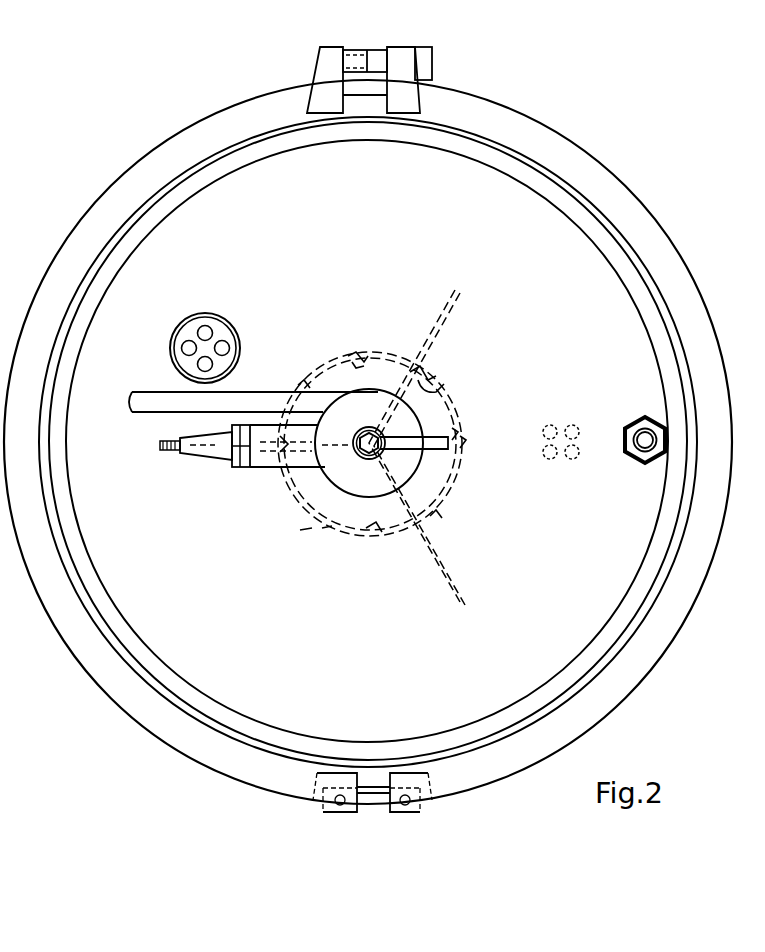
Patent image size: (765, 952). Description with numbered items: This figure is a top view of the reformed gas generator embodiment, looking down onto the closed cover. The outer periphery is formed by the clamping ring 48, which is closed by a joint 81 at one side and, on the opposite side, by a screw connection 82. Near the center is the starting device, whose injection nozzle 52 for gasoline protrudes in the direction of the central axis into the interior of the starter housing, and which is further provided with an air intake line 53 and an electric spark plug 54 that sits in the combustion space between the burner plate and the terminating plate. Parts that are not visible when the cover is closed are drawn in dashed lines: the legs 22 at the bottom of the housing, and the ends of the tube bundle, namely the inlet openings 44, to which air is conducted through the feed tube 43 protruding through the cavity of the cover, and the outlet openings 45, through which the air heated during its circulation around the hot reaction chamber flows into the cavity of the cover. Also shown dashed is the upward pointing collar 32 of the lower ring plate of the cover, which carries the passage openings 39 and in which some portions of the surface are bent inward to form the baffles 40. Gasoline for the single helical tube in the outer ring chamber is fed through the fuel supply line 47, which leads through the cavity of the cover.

The legs 22 is at (457, 296).
The upward pointing collar 32 is at (386, 426).
The passage openings 39 is at (352, 352).
The baffles 40 is at (359, 352).
The feed tube 43 is at (217, 333).
The inlet openings 44 is at (223, 347).
The outlet openings 45 is at (567, 427).
The fuel supply line 47 is at (640, 426).
The clamping ring 48 is at (176, 150).
The injection nozzle 52 is at (358, 455).
The air intake line 53 is at (248, 402).
The electric spark plug 54 is at (220, 455).
The joint 81 is at (402, 807).
The screw connection 82 is at (373, 57).